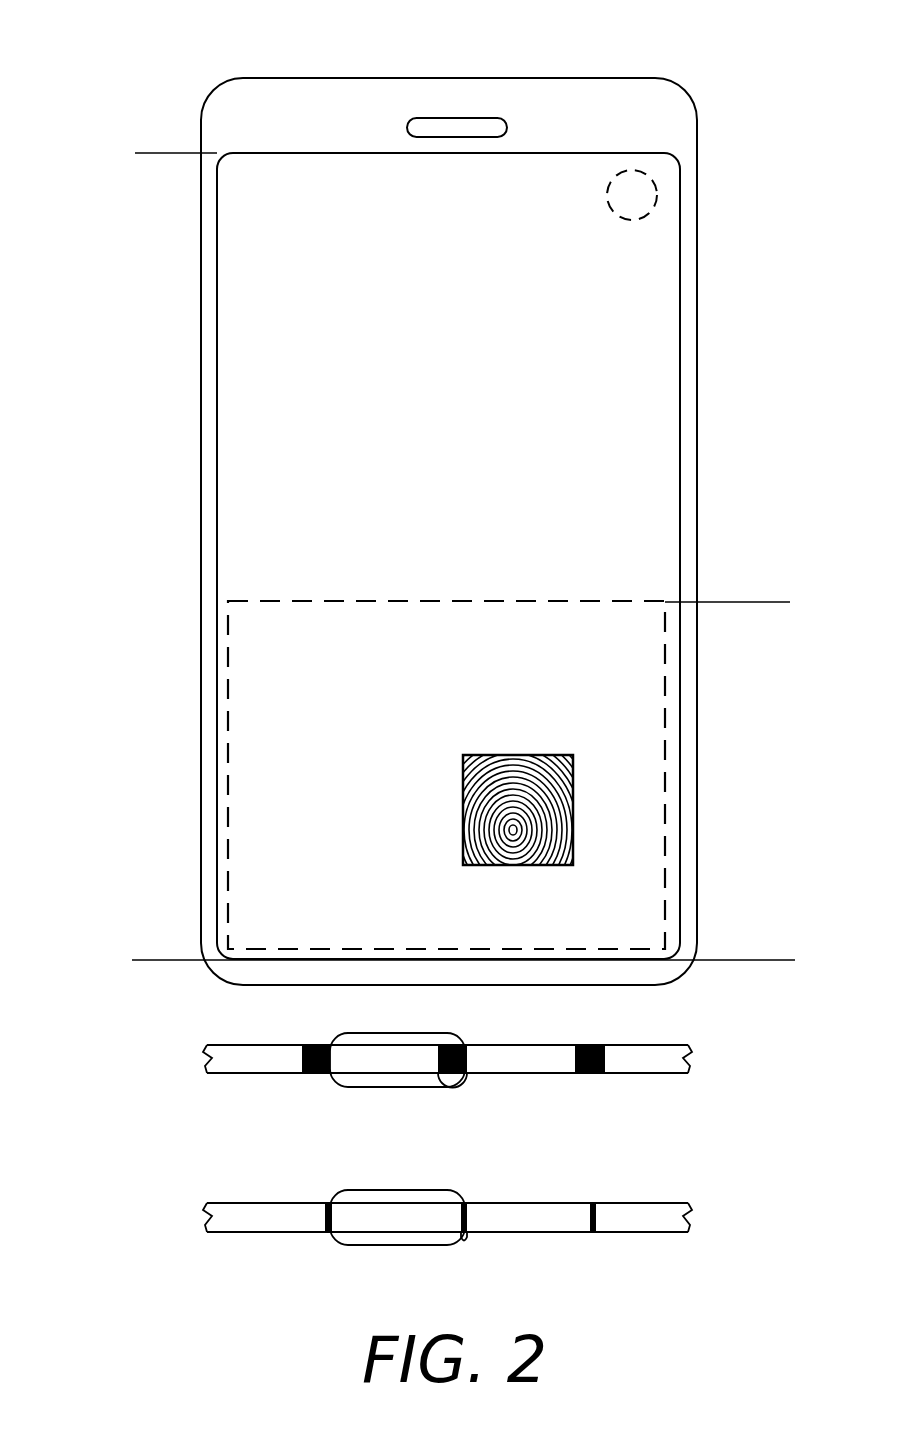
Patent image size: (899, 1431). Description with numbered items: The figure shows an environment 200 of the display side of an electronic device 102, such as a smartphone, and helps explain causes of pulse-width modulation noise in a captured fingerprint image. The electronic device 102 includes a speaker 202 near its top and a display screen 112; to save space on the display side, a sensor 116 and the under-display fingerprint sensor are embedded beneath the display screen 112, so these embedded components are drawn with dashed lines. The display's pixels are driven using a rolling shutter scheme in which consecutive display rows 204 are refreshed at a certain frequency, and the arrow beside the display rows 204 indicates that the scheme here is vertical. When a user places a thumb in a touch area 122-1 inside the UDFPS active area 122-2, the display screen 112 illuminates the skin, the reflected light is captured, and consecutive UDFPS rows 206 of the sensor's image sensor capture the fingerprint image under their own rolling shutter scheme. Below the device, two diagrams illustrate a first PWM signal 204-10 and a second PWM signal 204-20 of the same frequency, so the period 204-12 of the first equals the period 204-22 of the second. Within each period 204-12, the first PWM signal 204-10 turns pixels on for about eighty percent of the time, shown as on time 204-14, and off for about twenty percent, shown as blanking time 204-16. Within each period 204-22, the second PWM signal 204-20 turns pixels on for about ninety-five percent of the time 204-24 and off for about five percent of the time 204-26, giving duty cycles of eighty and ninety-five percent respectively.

The environment 200 is at (102, 36).
The electronic device 102 is at (560, 112).
The speaker 202 is at (407, 128).
The display screen 112 is at (465, 211).
The sensor 116 is at (642, 218).
The display rows 204 is at (150, 162).
The UDFPS active area 122-2 is at (476, 661).
The touch area 122-1 is at (511, 867).
The UDFPS rows 206 is at (747, 602).
The first PWM signal 204-10 is at (204, 1029).
The period of the first PWM signal 204-12 is at (398, 1033).
The on time 204-14 is at (385, 1088).
The blanking time 204-16 is at (452, 1088).
The second PWM signal 204-20 is at (204, 1177).
The period of the second PWM signal 204-22 is at (398, 1190).
The on time of the second PWM signal 204-24 is at (398, 1246).
The off time of the second PWM signal 204-26 is at (464, 1244).